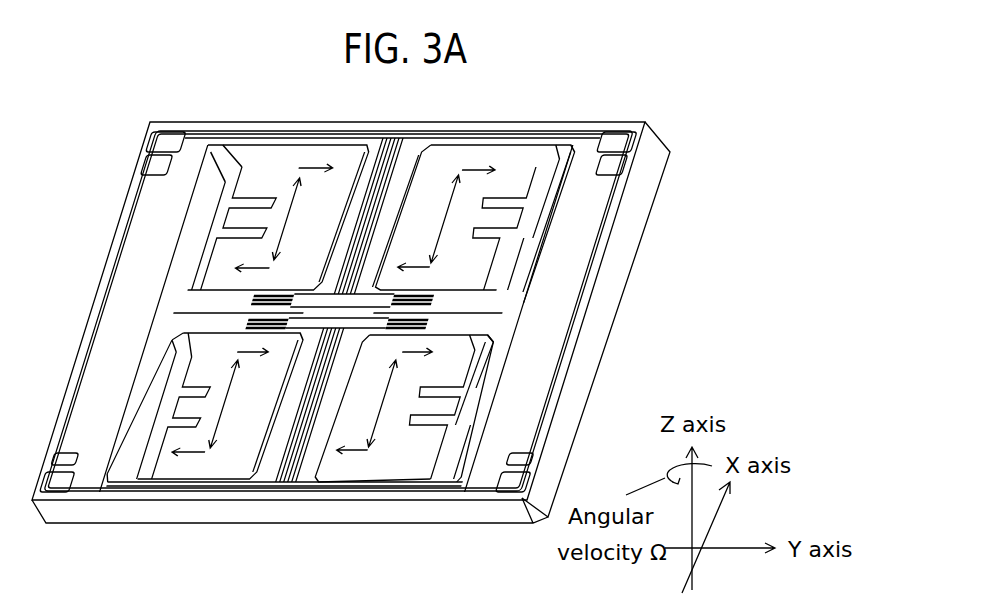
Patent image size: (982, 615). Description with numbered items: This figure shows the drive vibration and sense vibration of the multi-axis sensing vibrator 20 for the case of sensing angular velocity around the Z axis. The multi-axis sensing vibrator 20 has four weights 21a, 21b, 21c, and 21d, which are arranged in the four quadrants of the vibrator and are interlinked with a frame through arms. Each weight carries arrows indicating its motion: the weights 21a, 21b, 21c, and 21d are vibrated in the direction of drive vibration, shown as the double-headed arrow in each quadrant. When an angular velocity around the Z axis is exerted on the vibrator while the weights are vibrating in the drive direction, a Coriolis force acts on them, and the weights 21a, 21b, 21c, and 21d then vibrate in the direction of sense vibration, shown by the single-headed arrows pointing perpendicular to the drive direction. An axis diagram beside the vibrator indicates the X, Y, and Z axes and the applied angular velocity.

The multi-axis sensing vibrator 20 is at (147, 122).
The weight 21a is at (263, 165).
The weight 21b is at (185, 370).
The weight 21c is at (517, 163).
The weight 21d is at (412, 458).